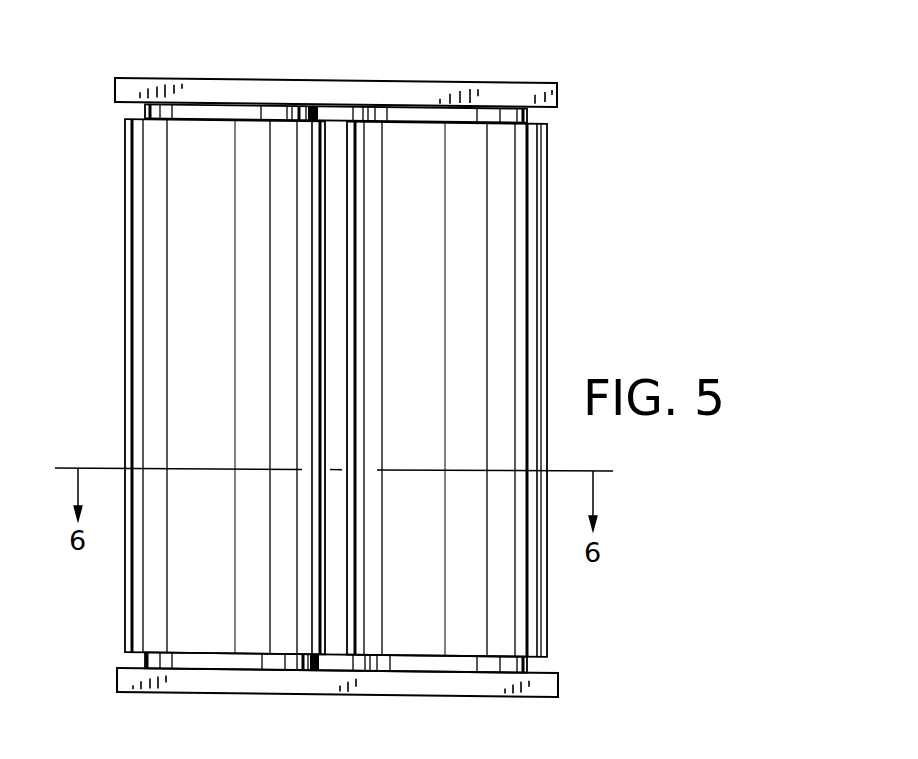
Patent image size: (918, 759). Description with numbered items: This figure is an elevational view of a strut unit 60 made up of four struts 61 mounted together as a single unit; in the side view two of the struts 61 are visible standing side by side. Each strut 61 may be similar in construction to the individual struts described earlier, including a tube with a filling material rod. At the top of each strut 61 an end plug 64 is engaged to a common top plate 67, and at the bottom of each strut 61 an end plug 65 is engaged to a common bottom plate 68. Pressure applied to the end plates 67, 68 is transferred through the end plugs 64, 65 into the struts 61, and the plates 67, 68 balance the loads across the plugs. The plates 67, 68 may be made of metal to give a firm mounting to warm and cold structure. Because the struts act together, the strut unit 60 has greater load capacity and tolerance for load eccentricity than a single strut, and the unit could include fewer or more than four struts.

The strut unit 60 is at (548, 241).
The strut 61 is at (150, 232).
The end plug 64 is at (145, 112).
The end plug 65 is at (145, 663).
The top plate 67 is at (506, 80).
The bottom plate 68 is at (544, 697).